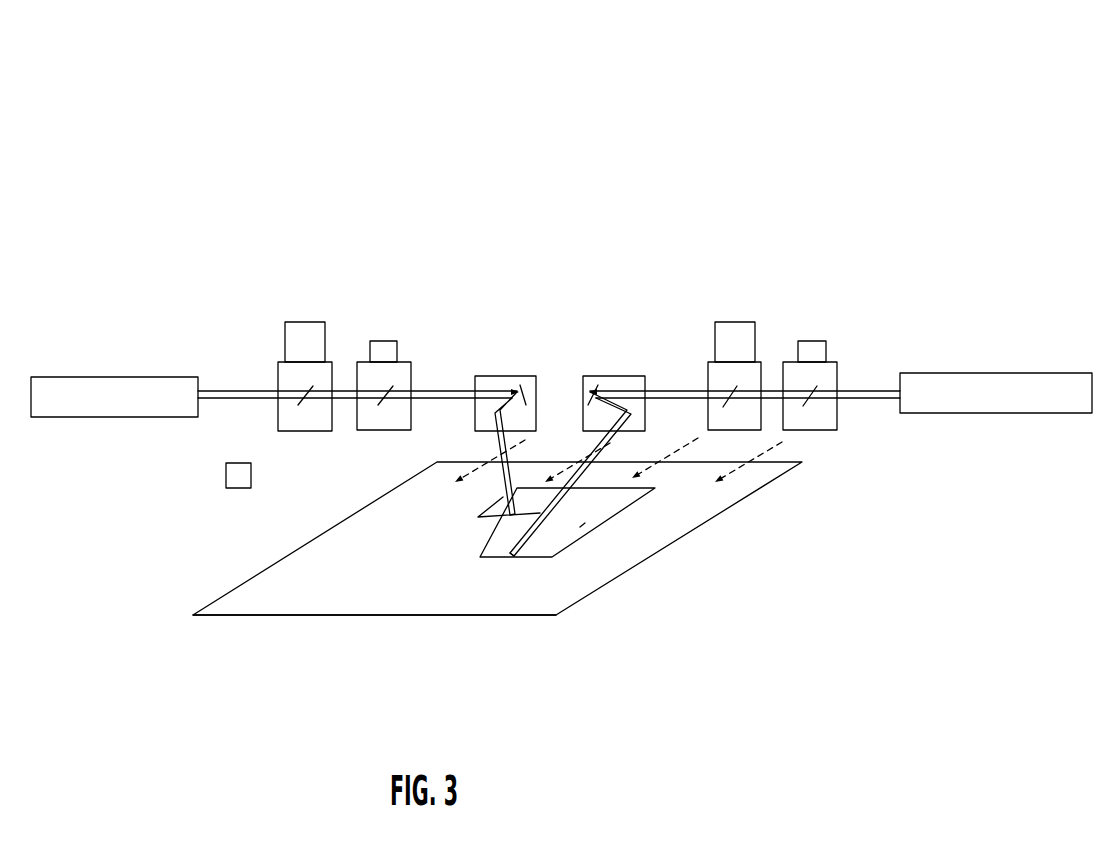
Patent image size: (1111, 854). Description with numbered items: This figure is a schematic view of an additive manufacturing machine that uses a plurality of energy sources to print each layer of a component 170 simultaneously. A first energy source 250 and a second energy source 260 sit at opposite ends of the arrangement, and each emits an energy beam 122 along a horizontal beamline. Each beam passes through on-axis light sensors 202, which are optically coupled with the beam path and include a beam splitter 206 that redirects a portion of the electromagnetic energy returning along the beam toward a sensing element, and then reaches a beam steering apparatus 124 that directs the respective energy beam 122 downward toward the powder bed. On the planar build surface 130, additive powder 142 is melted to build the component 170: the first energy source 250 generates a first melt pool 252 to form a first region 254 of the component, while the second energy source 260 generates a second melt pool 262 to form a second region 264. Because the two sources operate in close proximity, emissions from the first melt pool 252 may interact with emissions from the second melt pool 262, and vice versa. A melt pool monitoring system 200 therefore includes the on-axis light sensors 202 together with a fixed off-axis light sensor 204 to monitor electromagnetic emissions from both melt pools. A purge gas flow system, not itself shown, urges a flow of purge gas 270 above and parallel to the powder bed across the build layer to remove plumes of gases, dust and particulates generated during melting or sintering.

The melt pool monitoring system 200 is at (802, 120).
The second energy source 260 is at (103, 377).
The first energy source 250 is at (1032, 373).
The energy beam 122 is at (243, 390).
The on-axis light sensor 202 is at (382, 337).
The beam splitter 206 is at (390, 392).
The beam steering apparatus 124 is at (506, 372).
The second region 264 is at (543, 488).
The purge gas 270 is at (770, 450).
The off-axis light sensor 204 is at (224, 477).
The build surface 130 is at (360, 600).
The additive powder 142 is at (292, 592).
The component 170 is at (618, 503).
The second melt pool 262 is at (478, 517).
The first melt pool 252 is at (512, 558).
The first region 254 is at (582, 528).